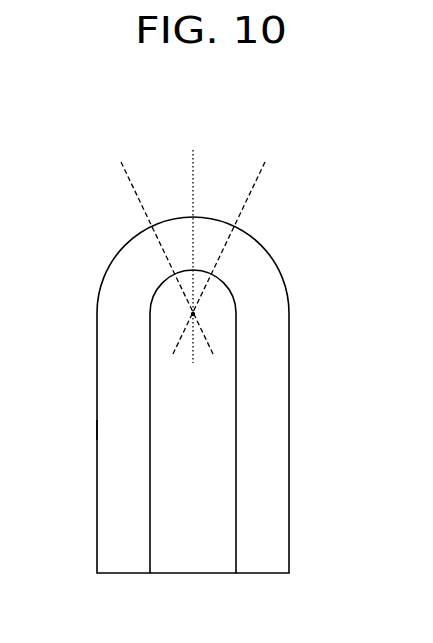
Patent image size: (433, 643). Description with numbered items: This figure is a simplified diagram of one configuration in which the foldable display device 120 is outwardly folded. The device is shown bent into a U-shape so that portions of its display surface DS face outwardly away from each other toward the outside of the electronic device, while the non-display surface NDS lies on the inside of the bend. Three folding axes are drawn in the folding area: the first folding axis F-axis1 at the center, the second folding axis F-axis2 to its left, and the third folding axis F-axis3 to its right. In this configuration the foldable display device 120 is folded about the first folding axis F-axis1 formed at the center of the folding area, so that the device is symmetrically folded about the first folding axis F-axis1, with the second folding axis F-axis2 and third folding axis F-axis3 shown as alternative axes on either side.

The foldable display device 120 is at (280, 476).
The display surface DS is at (96, 427).
The non-display surface NDS is at (155, 553).
The first folding axis F-axis1 is at (191, 244).
The second folding axis F-axis2 is at (129, 246).
The third folding axis F-axis3 is at (254, 246).